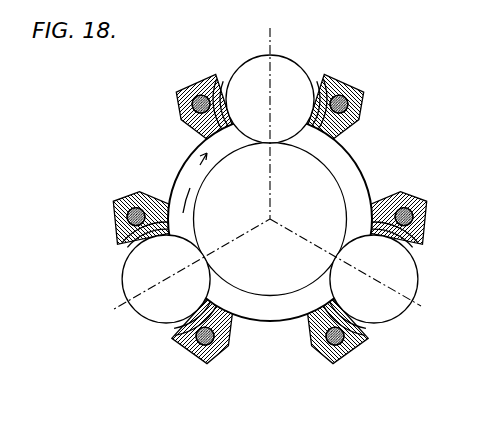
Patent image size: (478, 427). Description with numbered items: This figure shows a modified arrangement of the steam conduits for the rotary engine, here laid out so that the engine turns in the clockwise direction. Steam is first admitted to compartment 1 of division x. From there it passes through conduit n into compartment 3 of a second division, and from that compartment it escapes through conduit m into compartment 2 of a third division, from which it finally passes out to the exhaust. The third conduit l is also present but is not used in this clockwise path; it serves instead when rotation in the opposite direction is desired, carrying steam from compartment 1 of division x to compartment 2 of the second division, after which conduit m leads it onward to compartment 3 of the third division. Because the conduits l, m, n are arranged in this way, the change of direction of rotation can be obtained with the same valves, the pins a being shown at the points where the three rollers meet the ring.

The pivot pin a is at (118, 188).
The conduit m is at (282, 94).
The conduit n is at (152, 294).
The conduit l is at (379, 292).
The compartment 1 is at (269, 317).
The compartment 2 is at (276, 219).
The compartment 3 is at (195, 183).
The division x is at (267, 168).